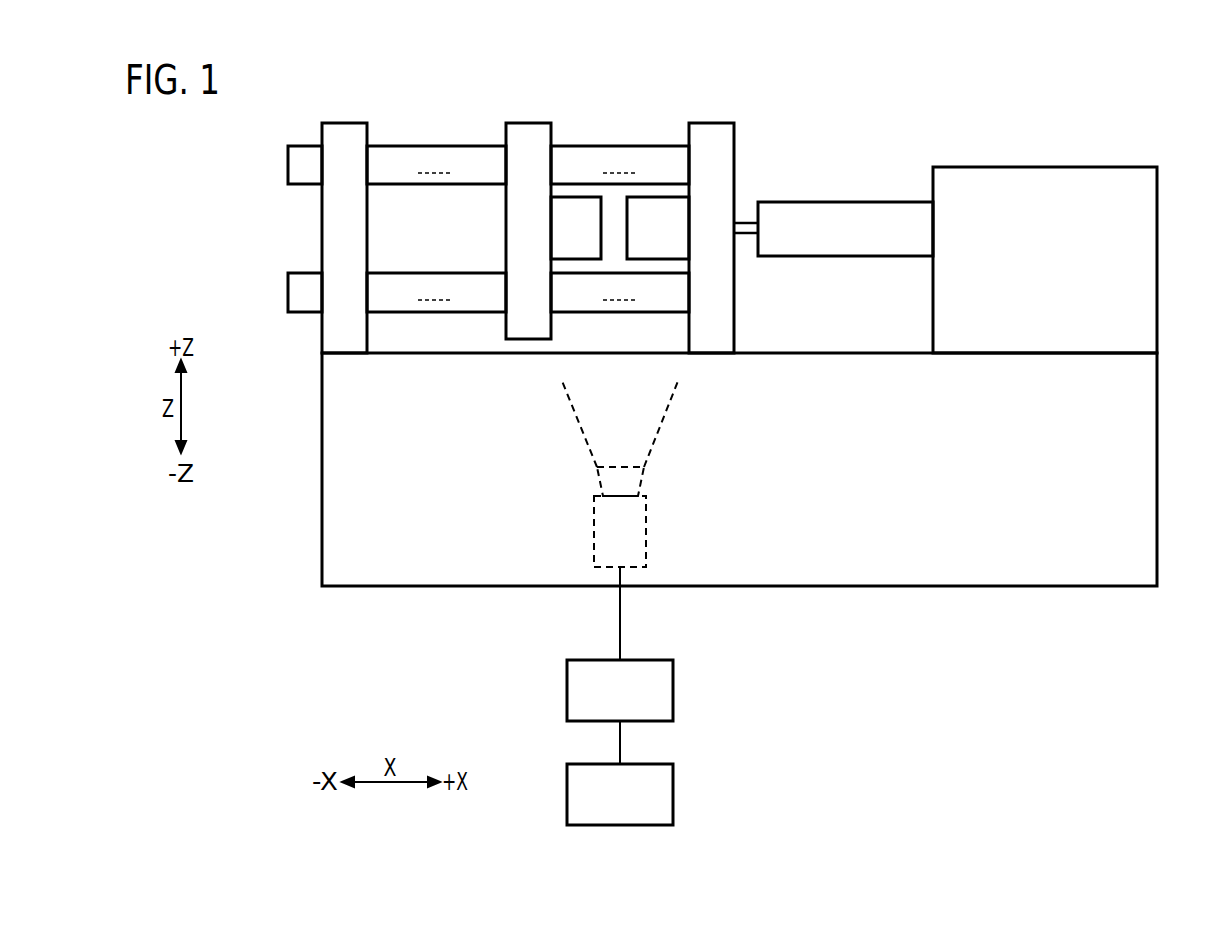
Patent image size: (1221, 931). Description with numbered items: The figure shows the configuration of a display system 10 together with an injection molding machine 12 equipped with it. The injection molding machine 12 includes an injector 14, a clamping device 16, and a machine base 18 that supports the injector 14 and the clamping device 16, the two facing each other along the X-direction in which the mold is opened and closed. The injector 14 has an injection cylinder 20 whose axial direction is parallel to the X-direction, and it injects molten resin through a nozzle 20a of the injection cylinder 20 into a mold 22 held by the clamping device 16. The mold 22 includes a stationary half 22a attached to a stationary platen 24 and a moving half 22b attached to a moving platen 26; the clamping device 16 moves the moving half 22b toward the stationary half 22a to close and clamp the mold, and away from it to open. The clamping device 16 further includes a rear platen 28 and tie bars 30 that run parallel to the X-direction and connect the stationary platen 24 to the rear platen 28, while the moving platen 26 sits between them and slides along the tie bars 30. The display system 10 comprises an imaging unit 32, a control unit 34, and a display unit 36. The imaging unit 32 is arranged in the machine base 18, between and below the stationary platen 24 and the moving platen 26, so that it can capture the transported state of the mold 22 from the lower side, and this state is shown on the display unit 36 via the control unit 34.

The display system 10 is at (750, 612).
The injection molding machine 12 is at (798, 137).
The injector 14 is at (1020, 165).
The clamping device 16 is at (513, 122).
The machine base 18 is at (1127, 463).
The injection cylinder 20 is at (827, 200).
The nozzle 20a is at (745, 235).
The mold 22 is at (620, 150).
The stationary half 22a is at (652, 213).
The moving half 22b is at (578, 213).
The stationary platen 24 is at (712, 130).
The moving platen 26 is at (526, 130).
The rear platen 28 is at (343, 132).
The tie bars 30 is at (395, 158).
The imaging unit 32 is at (646, 536).
The control unit 34 is at (673, 690).
The display unit 36 is at (673, 795).